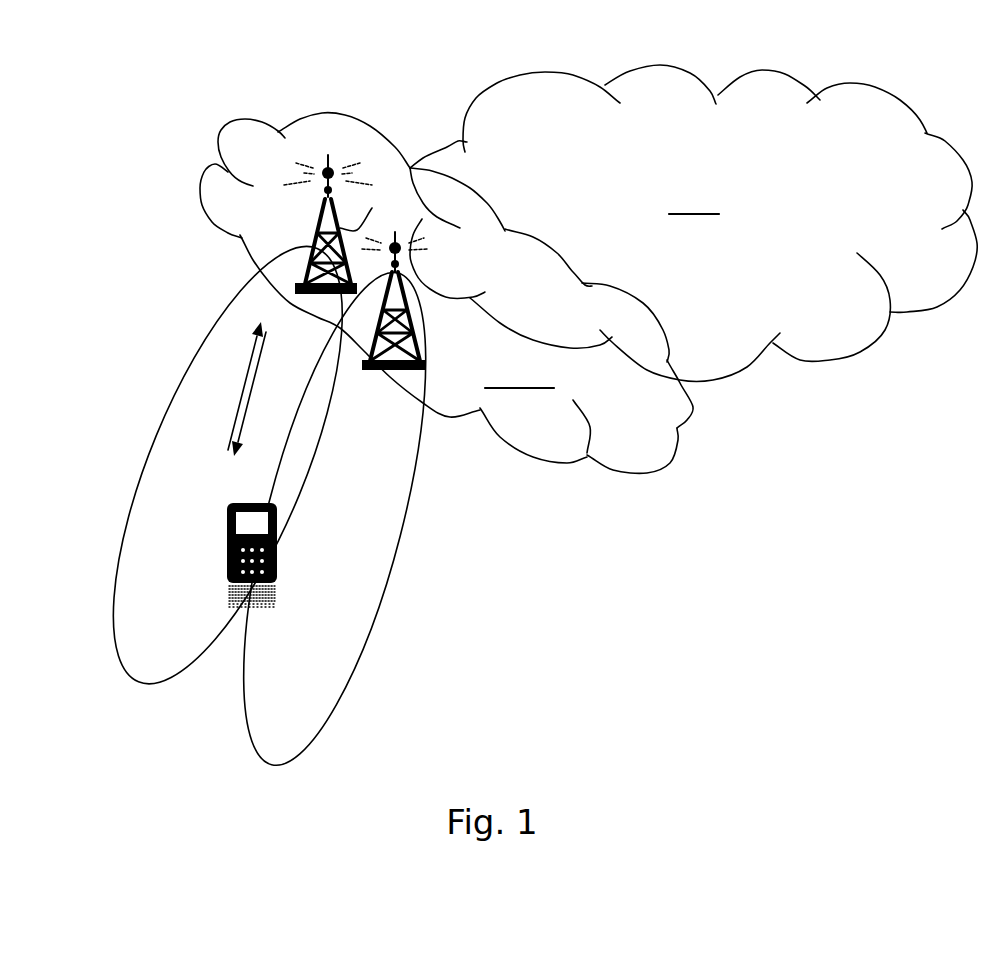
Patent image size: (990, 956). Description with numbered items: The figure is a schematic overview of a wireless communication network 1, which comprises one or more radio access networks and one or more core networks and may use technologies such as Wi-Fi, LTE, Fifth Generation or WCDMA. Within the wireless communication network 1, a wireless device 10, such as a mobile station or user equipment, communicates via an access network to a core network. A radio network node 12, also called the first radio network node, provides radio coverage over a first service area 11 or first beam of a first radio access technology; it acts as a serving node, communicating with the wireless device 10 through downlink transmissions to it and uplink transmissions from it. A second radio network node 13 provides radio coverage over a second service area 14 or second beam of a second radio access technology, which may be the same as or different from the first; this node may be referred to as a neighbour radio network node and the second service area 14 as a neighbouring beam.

The wireless communication network 1 is at (168, 80).
The wireless device 10 is at (226, 522).
The first service area 11 is at (126, 641).
The radio network node 12 is at (344, 224).
The second radio network node 13 is at (417, 301).
The second service area 14 is at (272, 718).